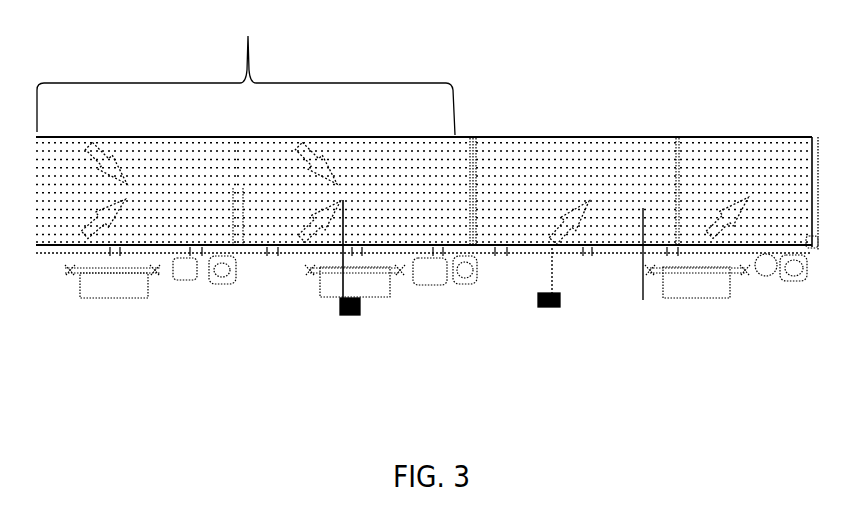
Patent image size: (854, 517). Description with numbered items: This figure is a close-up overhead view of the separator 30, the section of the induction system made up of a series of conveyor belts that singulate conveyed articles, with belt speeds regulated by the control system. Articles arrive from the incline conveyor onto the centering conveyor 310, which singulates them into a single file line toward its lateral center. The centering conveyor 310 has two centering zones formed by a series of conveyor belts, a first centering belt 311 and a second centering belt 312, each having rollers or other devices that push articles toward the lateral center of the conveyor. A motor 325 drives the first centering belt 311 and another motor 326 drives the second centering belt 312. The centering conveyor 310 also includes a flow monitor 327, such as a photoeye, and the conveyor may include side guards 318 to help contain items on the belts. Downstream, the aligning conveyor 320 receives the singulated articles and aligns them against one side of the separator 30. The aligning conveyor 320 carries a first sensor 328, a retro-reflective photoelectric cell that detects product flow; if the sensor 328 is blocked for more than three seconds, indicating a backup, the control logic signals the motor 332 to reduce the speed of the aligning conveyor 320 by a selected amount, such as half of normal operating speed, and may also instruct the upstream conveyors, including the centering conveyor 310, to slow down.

The separator 30 is at (522, 82).
The centering conveyor 310 is at (246, 70).
The first centering belt 311 is at (180, 157).
The second centering belt 312 is at (372, 143).
The side guards 318 is at (472, 137).
The aligning conveyor 320 is at (572, 132).
The motor 325 is at (185, 278).
The motor 326 is at (427, 281).
The flow monitor 327 is at (352, 317).
The first sensor 328 is at (560, 307).
The motor 332 is at (742, 275).